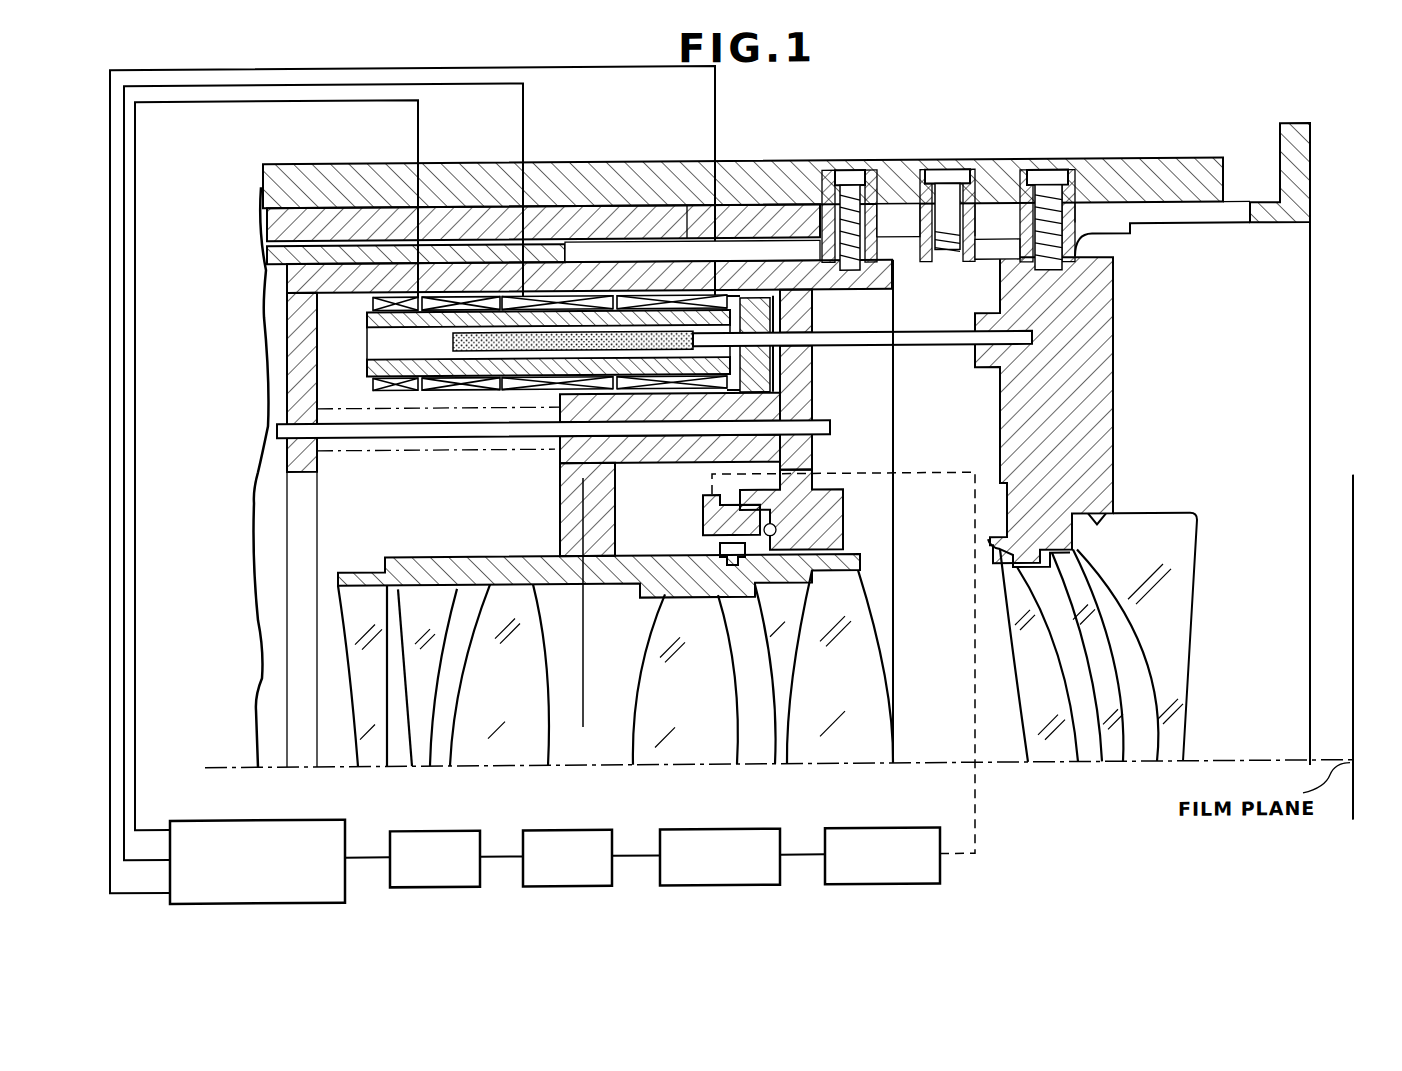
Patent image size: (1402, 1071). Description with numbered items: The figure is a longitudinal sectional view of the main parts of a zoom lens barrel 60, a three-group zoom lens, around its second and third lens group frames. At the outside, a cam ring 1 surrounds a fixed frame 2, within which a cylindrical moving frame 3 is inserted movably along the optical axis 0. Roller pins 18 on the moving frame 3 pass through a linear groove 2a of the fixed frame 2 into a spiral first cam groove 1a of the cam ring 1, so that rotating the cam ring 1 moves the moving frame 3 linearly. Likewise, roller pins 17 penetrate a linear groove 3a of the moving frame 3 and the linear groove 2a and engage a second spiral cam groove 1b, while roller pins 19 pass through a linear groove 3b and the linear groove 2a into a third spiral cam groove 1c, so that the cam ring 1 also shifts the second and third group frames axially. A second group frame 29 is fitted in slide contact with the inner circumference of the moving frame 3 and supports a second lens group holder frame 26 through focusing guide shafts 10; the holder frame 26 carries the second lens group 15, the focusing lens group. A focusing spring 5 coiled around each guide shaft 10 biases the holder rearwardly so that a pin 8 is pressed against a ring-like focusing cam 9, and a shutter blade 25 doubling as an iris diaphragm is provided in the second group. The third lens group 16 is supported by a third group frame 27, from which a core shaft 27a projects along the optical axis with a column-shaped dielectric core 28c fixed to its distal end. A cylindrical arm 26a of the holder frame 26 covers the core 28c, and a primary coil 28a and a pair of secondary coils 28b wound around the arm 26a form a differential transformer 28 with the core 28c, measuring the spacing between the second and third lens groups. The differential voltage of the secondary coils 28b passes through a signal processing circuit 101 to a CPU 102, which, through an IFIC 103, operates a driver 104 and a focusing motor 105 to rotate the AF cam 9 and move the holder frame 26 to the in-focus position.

The cam ring 1 is at (335, 185).
The first cam groove 1a is at (968, 204).
The second spiral cam groove 1b is at (870, 214).
The third spiral cam groove 1c is at (1055, 205).
The fixed frame 2 is at (455, 215).
The linear groove 2a is at (890, 226).
The moving frame 3 is at (370, 250).
The linear groove 3a is at (735, 257).
The linear groove 3b is at (998, 246).
The focusing spring 5 is at (318, 385).
The pin 8 is at (720, 553).
The focusing cam 9 is at (705, 518).
The focusing guide shaft 10 is at (277, 430).
The second lens group 15 is at (893, 774).
The third lens group 16 is at (1185, 778).
The roller pin 17 is at (845, 239).
The roller pin 18 is at (940, 204).
The roller pin 19 is at (1067, 221).
The shutter blade 25 is at (583, 622).
The second lens group holder frame 26 is at (400, 566).
The cylindrical arm 26a is at (440, 362).
The third group frame 27 is at (1088, 317).
The core shaft 27a is at (935, 349).
The differential transformer 28 is at (548, 305).
The primary coil 28a is at (580, 282).
The secondary coils 28b is at (525, 292).
The dielectric core 28c is at (525, 347).
The second group frame 29 is at (300, 315).
The lens barrel 60 is at (1170, 151).
The optical axis 0 is at (231, 766).
The signal processing circuit 101 is at (195, 820).
The CPU 102 is at (422, 832).
The IFIC 103 is at (555, 832).
The driver 104 is at (700, 832).
The focusing motor 105 is at (865, 832).